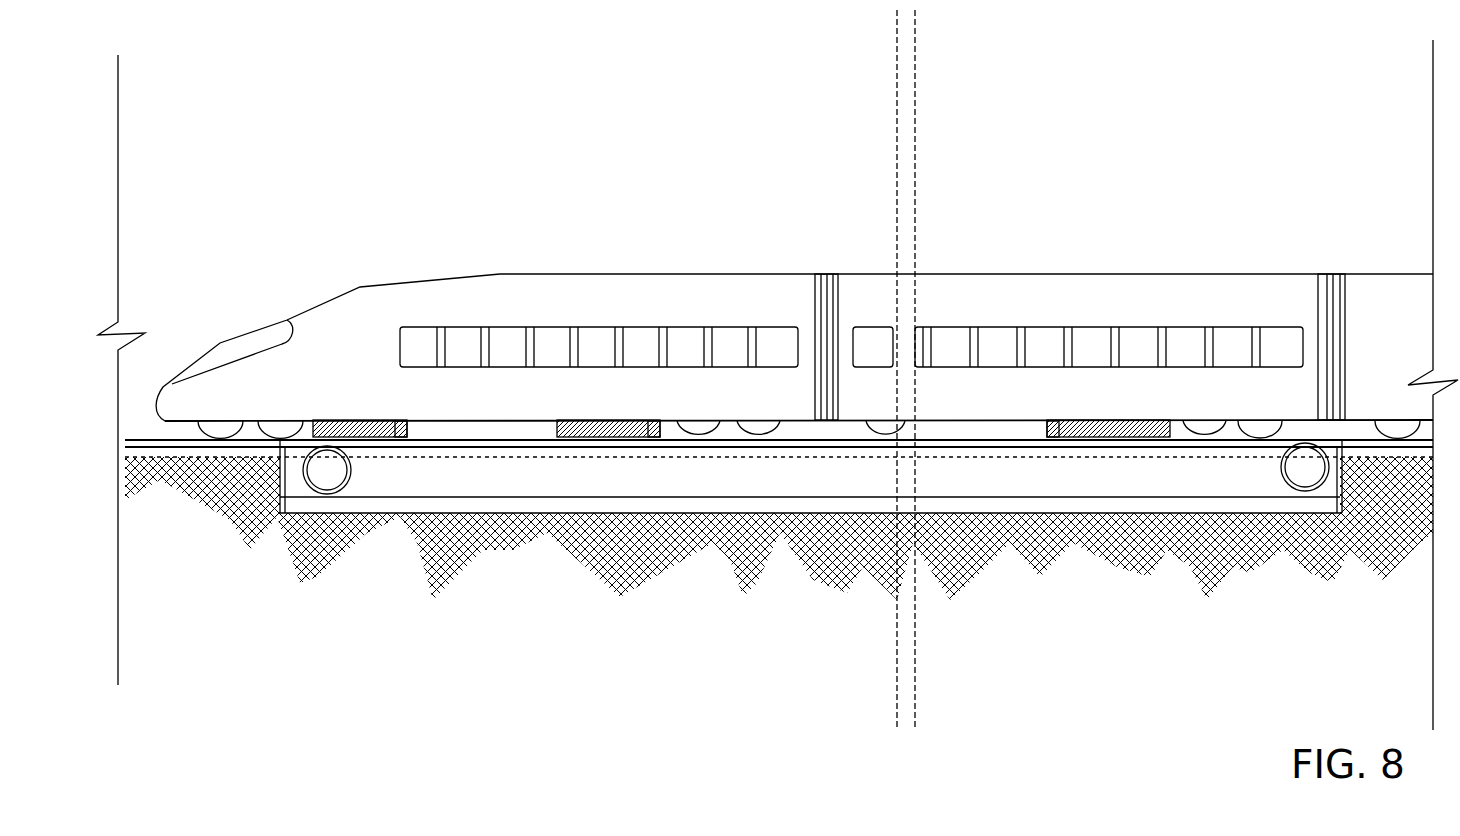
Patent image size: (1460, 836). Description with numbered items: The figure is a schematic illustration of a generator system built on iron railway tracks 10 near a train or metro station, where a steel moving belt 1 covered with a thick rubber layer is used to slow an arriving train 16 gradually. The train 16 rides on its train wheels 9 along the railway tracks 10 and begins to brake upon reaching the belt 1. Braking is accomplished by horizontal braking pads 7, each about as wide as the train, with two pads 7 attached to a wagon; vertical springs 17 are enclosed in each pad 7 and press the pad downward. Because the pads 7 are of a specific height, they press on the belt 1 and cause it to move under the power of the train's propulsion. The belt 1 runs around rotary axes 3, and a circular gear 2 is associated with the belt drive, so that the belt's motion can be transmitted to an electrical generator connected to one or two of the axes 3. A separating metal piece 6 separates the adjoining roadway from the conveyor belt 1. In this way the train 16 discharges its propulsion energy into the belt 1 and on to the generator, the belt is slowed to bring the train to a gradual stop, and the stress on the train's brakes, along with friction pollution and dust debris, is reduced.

The metal moving belt 1 is at (489, 462).
The circular gear 2 is at (370, 473).
The rotary axis 3 is at (327, 488).
The separating metal piece 6 is at (286, 485).
The horizontal braking pad 7 is at (420, 432).
The train wheel 9 is at (762, 445).
The railway tracks 10 is at (144, 428).
The train 16 is at (688, 265).
The springs 17 is at (363, 410).